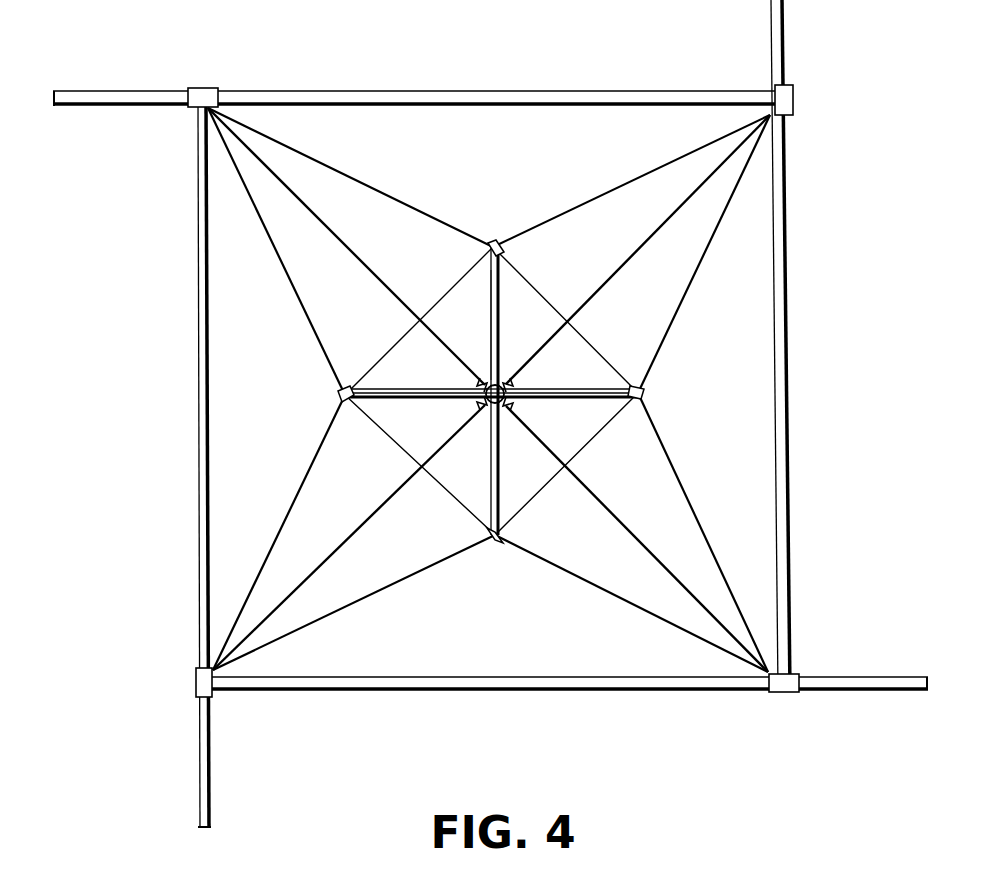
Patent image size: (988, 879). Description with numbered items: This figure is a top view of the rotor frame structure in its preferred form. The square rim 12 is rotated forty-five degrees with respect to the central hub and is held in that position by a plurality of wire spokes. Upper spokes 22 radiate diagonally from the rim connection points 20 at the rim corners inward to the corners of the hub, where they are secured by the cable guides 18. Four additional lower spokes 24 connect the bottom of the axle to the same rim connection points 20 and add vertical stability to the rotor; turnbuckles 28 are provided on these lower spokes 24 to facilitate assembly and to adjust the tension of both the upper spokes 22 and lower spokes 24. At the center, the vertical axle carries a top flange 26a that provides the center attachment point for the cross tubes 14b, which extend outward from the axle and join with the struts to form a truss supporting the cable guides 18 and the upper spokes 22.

The rim 12 is at (202, 412).
The rim connection points 20 is at (203, 98).
The upper spokes 22 is at (275, 247).
The cable guides 18 is at (493, 242).
The cross tubes 14b is at (494, 294).
The lower spokes 24 is at (612, 266).
The turnbuckles 28 is at (512, 378).
The top flange 26a is at (484, 404).